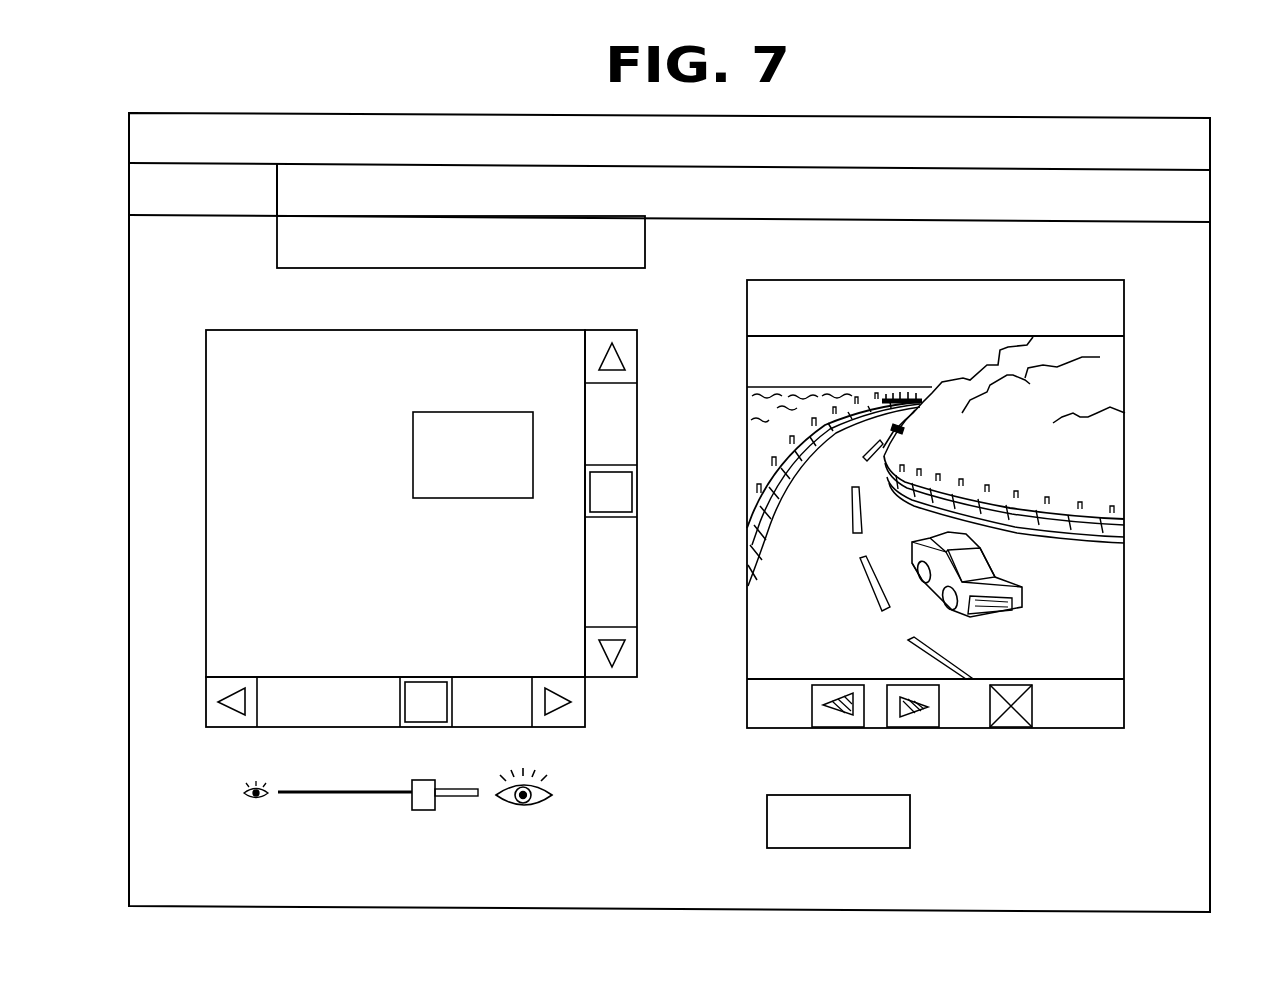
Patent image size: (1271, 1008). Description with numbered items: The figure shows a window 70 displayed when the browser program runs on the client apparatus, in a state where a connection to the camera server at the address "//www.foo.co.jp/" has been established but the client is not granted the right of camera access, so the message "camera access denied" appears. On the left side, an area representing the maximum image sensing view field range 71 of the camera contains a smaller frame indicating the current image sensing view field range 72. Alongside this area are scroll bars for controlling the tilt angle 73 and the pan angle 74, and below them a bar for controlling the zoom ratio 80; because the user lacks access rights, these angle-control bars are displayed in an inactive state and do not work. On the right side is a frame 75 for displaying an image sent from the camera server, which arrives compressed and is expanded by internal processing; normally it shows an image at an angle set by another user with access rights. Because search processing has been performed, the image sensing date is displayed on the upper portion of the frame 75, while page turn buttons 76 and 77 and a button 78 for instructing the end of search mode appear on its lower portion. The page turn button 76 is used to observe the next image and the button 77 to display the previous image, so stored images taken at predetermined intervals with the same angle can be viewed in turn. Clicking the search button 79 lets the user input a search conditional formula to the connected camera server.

The window 70 is at (1211, 381).
The maximum image sensing view field range 71 is at (237, 330).
The current image sensing view field range 72 is at (413, 435).
The scroll bar for controlling the tilt angle 73 is at (585, 593).
The scroll bar for controlling the pan angle 74 is at (323, 677).
The frame for displaying an image 75 is at (1078, 732).
The page turn button 76 is at (920, 712).
The page turn button 77 is at (842, 708).
The button for instructing to end the search mode 78 is at (1013, 726).
The search button 79 is at (912, 826).
The bar for controlling the zoom ratio 80 is at (432, 780).